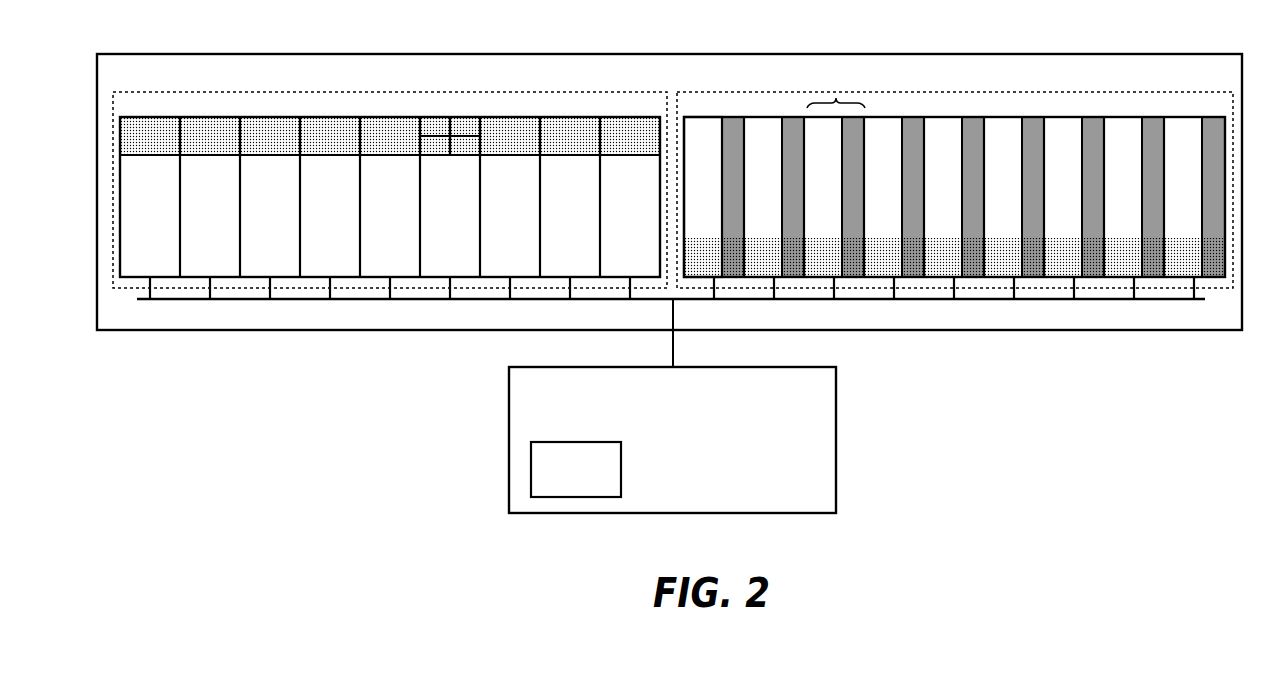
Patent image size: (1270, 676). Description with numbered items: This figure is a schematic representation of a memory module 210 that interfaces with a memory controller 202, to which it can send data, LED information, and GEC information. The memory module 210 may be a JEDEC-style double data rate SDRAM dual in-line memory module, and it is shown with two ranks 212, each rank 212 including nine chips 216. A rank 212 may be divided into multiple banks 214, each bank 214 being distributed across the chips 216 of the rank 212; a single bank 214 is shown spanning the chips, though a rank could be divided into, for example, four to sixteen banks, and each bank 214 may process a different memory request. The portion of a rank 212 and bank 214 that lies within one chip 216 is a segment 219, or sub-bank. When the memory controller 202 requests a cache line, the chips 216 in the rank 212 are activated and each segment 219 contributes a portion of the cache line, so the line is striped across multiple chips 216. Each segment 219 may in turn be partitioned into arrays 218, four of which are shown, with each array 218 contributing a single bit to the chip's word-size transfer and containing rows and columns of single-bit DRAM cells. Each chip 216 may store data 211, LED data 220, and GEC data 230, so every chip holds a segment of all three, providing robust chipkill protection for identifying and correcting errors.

The memory controller 202 is at (836, 402).
The memory module 210 is at (200, 53).
The data 211 is at (707, 127).
The rank 212 is at (360, 92).
The bank 214 is at (390, 155).
The chip 216 is at (332, 116).
The array 218 is at (458, 124).
The segment 219 is at (836, 99).
The LED data 220 is at (733, 122).
The GEC data 230 is at (710, 260).